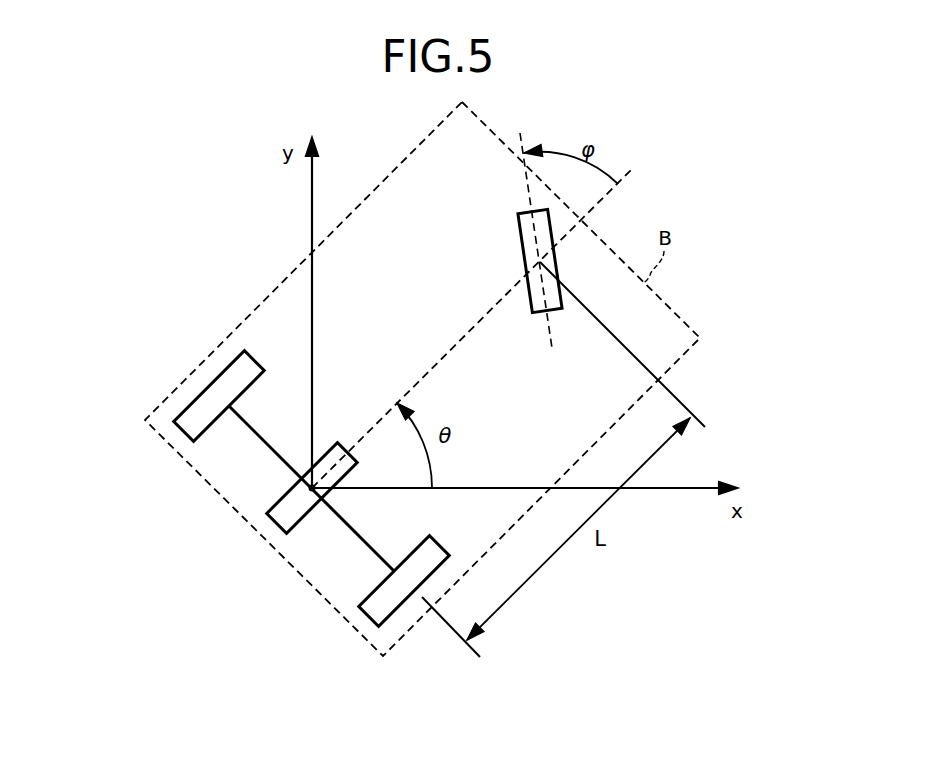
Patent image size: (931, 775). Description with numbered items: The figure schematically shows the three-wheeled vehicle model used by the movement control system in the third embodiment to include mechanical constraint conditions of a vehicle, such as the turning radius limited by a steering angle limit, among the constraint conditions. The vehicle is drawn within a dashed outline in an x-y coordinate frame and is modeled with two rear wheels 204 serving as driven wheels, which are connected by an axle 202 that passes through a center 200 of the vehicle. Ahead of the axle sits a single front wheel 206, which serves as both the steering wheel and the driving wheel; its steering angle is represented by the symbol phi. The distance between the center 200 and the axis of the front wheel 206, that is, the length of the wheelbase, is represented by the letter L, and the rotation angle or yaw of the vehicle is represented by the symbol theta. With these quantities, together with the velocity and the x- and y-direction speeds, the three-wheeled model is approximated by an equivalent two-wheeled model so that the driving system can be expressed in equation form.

The center 200 is at (310, 490).
The axle 202 is at (265, 447).
The rear wheels 204 is at (182, 433).
The front wheel 206 is at (518, 242).